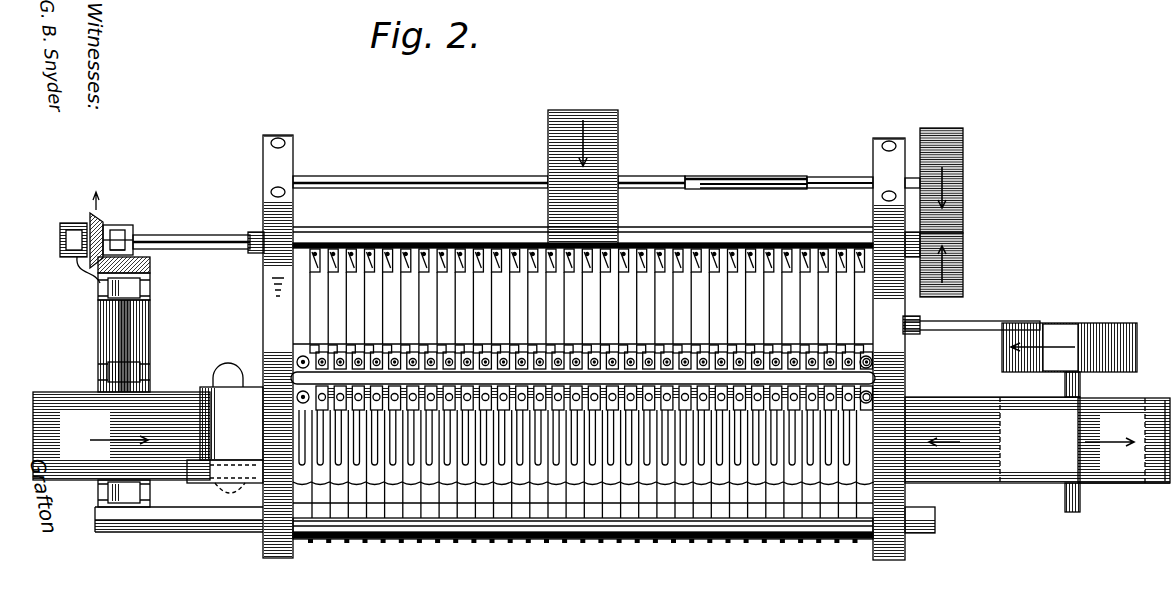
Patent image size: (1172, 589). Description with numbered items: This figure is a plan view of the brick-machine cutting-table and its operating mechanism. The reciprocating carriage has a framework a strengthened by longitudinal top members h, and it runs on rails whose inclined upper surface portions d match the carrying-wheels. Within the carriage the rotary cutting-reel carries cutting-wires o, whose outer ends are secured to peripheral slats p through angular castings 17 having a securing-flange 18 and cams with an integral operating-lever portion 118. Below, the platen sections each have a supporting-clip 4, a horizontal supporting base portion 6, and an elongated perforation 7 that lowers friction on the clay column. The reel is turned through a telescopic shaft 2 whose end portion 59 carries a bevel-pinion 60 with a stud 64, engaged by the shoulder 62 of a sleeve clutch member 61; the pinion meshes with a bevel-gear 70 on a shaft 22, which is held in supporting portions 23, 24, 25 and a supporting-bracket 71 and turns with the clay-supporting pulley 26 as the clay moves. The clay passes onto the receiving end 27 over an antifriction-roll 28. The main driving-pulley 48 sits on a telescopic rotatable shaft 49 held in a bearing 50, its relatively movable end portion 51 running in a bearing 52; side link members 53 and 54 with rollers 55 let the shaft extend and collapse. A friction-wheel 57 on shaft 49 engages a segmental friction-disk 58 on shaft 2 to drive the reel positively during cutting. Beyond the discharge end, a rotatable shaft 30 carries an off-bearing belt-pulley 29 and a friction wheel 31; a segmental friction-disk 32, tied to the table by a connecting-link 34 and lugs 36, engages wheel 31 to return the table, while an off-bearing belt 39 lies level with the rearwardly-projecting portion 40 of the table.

The shaft 2 is at (418, 243).
The supporting-clip 4 is at (586, 396).
The supporting base portion 6 is at (586, 413).
The elongated perforation 7 is at (586, 413).
The angular casting 17 is at (586, 396).
The securing-flange 18 is at (586, 391).
The operating-lever portion 118 is at (586, 391).
The shaft 22 is at (150, 325).
The supporting portion 23 is at (98, 290).
The supporting portion 24 is at (100, 368).
The supporting portion 25 is at (128, 505).
The clay-supporting pulley 26 is at (176, 481).
The receiving end 27 is at (225, 440).
The antifriction-roll 28 is at (215, 383).
The off-bearing belt-pulley 29 is at (1100, 487).
The rotatable shaft 30 is at (1063, 500).
The friction wheel 31 is at (1082, 335).
The segmental friction-disk 32 is at (1046, 335).
The connecting-link 34 is at (972, 330).
The lugs 36 is at (922, 322).
The off-bearing belt 39 is at (1124, 440).
The rearwardly-projecting portion 40 is at (992, 440).
The main driving-pulley 48 is at (548, 135).
The telescopic rotatable shaft 49 is at (380, 177).
The bearing 50 is at (268, 160).
The relatively movable end portion 51 is at (822, 178).
The bearing 52 is at (880, 140).
The side link members 53 is at (746, 179).
The side link members 54 is at (766, 188).
The rollers 55 is at (708, 169).
The friction-wheel 57 is at (940, 132).
The segmental friction-disk 58 is at (963, 256).
The end portion 59 is at (137, 238).
The bevel-pinion 60 is at (93, 225).
The sleeve clutch member 61 is at (128, 237).
The shoulder 62 is at (124, 231).
The stud 64 is at (112, 230).
The bevel-gear 70 is at (150, 268).
The supporting-bracket 71 is at (62, 228).
The framework a is at (584, 347).
The inclined upper surface portions d is at (246, 533).
The longitudinal top members h is at (706, 378).
The cutting-wires o is at (742, 560).
The peripheral slats p is at (586, 391).